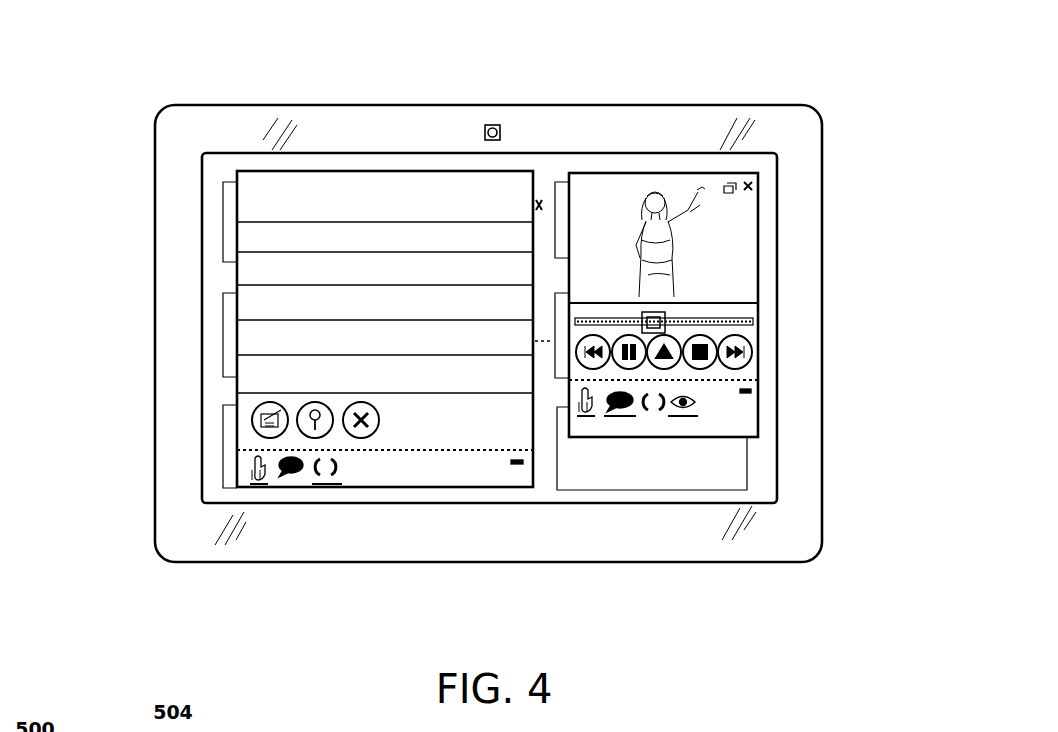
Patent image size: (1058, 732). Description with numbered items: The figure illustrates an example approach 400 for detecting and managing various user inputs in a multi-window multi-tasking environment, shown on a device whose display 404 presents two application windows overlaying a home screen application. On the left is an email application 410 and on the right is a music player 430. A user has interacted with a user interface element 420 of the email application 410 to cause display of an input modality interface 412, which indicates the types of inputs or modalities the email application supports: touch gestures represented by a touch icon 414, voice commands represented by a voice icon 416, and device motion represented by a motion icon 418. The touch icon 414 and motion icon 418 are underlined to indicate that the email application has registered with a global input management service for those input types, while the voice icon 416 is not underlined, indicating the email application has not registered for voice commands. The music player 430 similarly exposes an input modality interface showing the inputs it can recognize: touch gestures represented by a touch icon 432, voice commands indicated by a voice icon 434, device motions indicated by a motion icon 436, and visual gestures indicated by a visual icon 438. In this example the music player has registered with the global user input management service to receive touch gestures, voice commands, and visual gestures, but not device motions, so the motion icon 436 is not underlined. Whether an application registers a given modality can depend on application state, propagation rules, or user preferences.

The example approach 400 is at (86, 147).
The display 404 is at (382, 104).
The email application 410 is at (265, 198).
The input modality interface 412 is at (242, 473).
The touch icon 414 is at (267, 494).
The voice icon 416 is at (300, 494).
The motion icon 418 is at (343, 494).
The user interface element 420 is at (527, 491).
The music player 430 is at (745, 230).
The touch icon 432 is at (587, 423).
The voice icon 434 is at (627, 423).
The motion icon 436 is at (660, 421).
The visual icon 438 is at (700, 423).